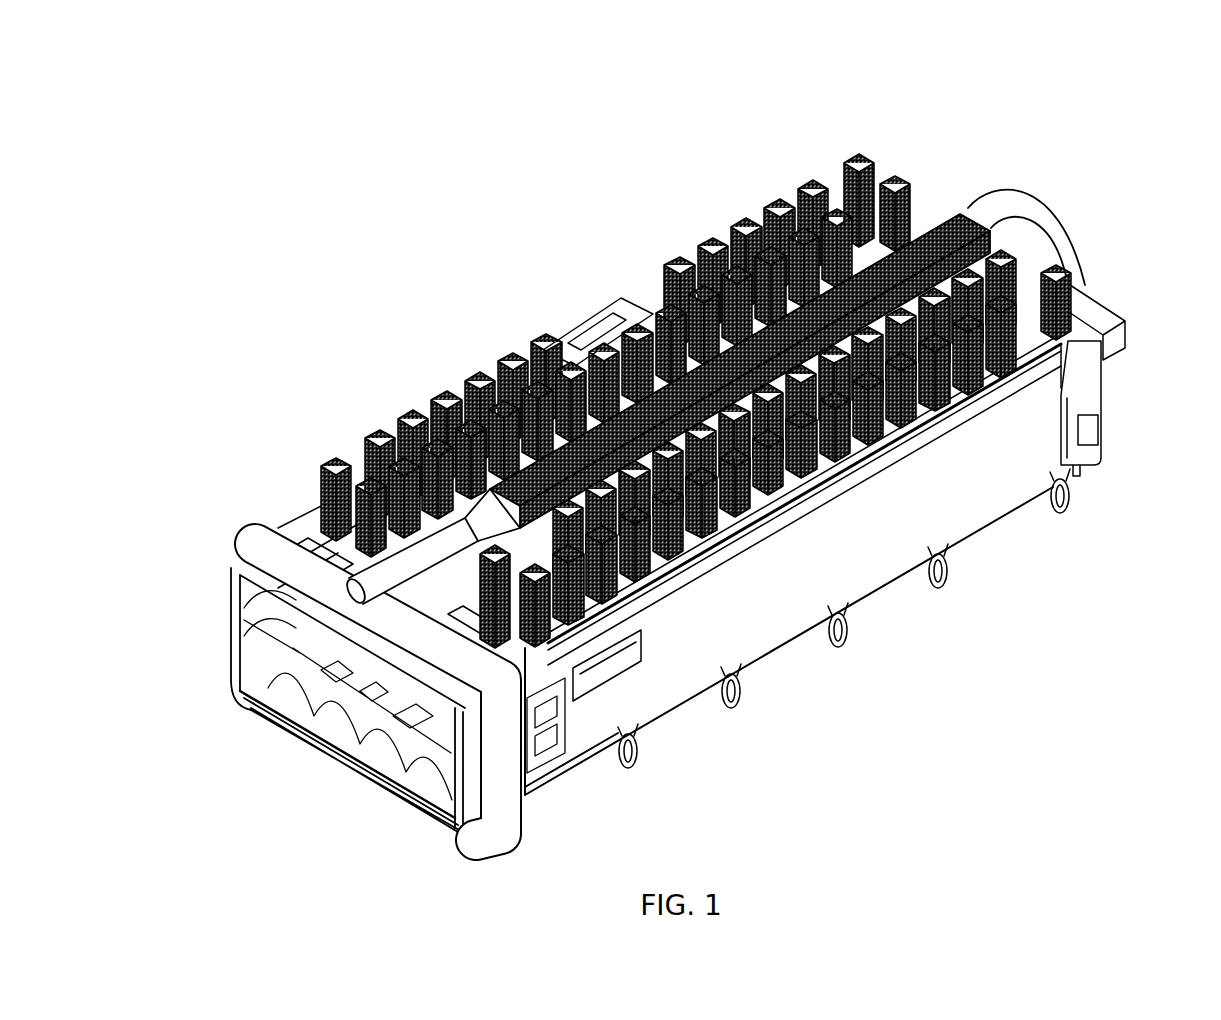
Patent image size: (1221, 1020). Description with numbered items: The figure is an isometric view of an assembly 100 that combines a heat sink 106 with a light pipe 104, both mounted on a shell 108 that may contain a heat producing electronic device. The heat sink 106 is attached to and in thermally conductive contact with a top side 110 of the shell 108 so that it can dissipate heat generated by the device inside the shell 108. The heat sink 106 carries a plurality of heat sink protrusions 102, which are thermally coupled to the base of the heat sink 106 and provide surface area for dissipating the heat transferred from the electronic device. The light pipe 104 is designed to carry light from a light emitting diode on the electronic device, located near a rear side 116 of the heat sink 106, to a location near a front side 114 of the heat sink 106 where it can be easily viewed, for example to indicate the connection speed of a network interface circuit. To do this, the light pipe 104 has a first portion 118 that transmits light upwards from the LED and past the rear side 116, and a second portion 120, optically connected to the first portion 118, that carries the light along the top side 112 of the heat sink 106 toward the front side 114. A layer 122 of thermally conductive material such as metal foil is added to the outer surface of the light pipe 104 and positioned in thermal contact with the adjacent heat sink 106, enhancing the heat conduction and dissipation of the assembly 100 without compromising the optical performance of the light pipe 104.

The assembly 100 is at (231, 205).
The heat sink protrusions 102 is at (795, 186).
The light pipe 104 is at (1083, 166).
The heat sink 106 is at (375, 320).
The shell 108 is at (787, 559).
The top side of shell 110 is at (1068, 322).
The top side of heat sink 112 is at (600, 400).
The front side of heat sink 114 is at (312, 494).
The rear side of heat sink 116 is at (1060, 279).
The first portion of light pipe 118 is at (1013, 208).
The second portion of light pipe 120 is at (727, 364).
The layer of thermally conductive material 122 is at (598, 432).